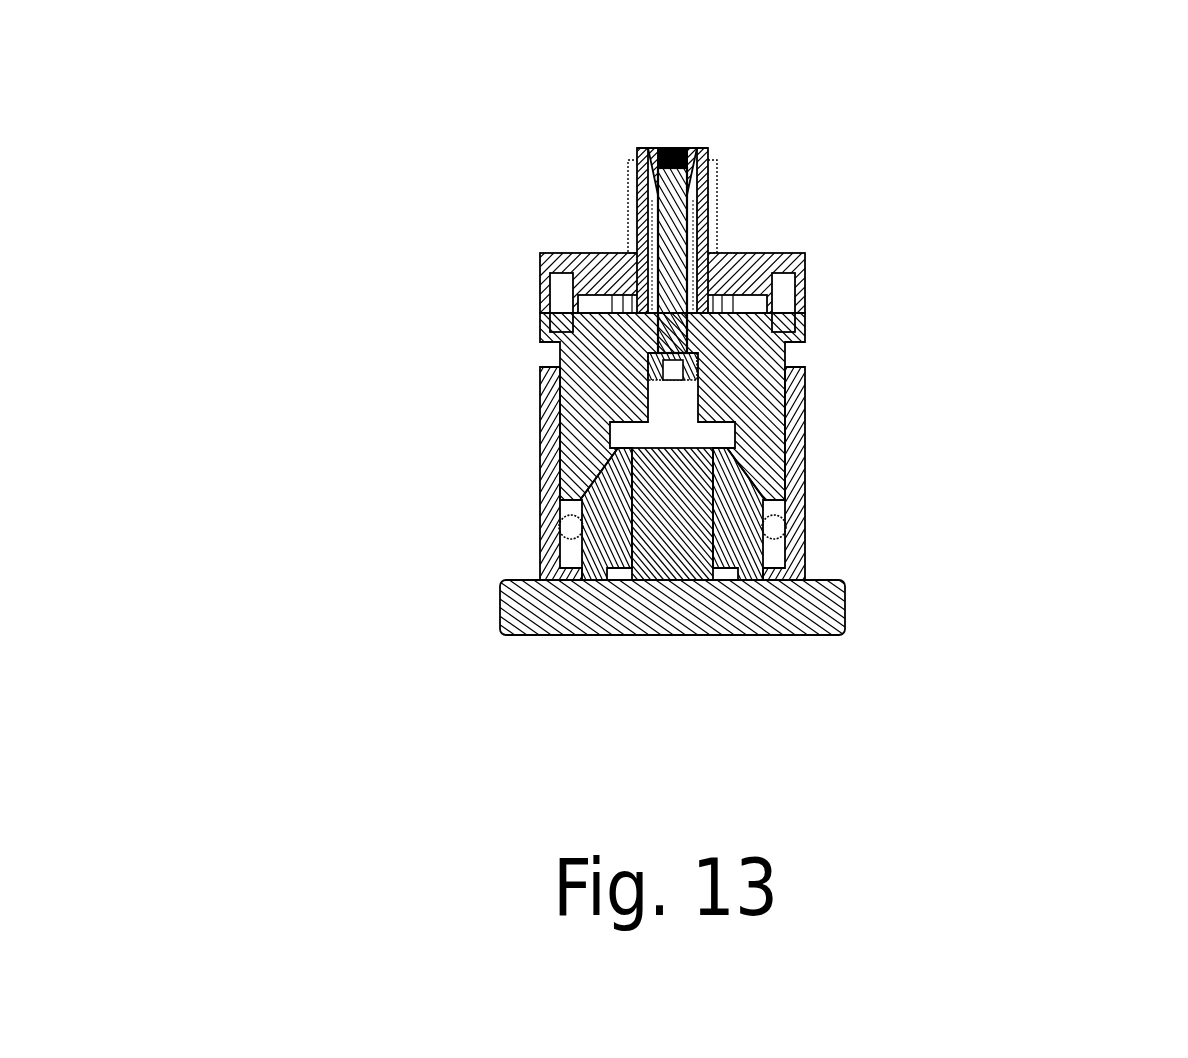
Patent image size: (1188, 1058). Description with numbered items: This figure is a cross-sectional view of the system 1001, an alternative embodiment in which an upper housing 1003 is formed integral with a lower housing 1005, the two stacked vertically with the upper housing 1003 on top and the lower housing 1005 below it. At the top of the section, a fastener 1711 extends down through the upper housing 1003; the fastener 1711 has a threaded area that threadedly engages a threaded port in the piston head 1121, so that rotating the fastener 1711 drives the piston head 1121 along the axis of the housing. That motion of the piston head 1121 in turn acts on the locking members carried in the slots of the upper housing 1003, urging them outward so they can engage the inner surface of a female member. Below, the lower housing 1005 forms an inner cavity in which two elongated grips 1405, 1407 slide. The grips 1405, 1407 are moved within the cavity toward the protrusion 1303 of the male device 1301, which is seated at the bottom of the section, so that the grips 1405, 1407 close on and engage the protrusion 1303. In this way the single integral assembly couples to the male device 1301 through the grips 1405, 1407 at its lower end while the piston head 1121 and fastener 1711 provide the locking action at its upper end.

The system 1001 is at (380, 122).
The upper housing 1003 is at (962, 229).
The lower housing 1005 is at (937, 440).
The piston head 1121 is at (702, 146).
The fastener 1711 is at (687, 245).
The male device 1301 is at (812, 638).
The protrusion 1303 is at (633, 540).
The grip 1405 is at (774, 528).
The grip 1407 is at (571, 530).